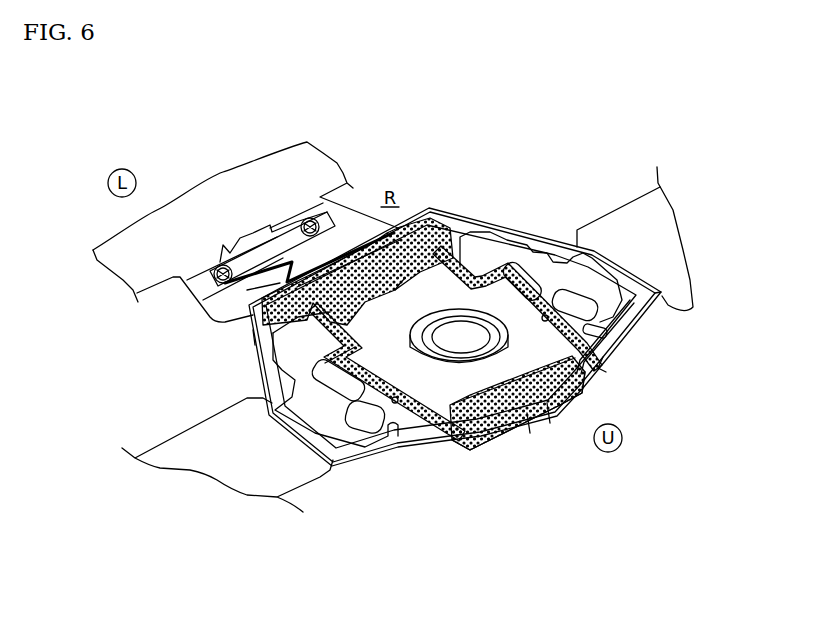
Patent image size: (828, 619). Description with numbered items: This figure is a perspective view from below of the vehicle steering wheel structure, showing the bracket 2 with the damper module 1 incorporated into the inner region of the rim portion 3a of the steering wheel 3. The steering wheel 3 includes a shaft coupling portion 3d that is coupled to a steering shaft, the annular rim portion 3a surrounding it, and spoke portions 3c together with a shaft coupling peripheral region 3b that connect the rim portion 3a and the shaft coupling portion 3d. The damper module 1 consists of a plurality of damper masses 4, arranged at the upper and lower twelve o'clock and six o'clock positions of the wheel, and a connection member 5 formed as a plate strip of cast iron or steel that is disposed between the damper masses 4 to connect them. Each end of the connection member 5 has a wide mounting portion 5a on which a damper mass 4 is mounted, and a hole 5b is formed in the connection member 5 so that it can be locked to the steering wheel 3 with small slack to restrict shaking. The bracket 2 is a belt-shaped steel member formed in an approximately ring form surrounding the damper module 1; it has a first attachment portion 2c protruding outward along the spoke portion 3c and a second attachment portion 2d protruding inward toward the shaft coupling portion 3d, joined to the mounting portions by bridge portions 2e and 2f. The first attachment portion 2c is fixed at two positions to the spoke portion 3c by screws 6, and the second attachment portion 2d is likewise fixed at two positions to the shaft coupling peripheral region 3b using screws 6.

The damper module 1 is at (477, 263).
The bracket 2 is at (437, 290).
The first attachment portion 2c is at (257, 257).
The second attachment portion 2d is at (603, 358).
The bridge portion 2e is at (250, 343).
The bridge portion 2f is at (652, 283).
The steering wheel 3 is at (393, 347).
The rim portion 3a is at (185, 203).
The shaft coupling peripheral region 3b is at (583, 390).
The spoke portion 3c is at (598, 223).
The shaft coupling portion 3d is at (497, 340).
The damper mass 4 is at (402, 290).
The connection member 5 is at (487, 330).
The mounting portion 5a is at (436, 232).
The hole 5b is at (400, 400).
The screw 6 is at (210, 280).